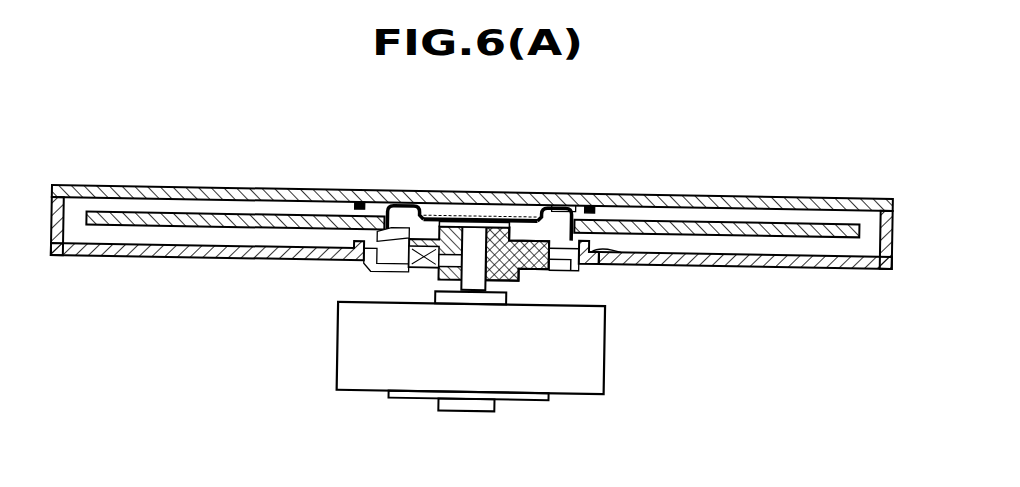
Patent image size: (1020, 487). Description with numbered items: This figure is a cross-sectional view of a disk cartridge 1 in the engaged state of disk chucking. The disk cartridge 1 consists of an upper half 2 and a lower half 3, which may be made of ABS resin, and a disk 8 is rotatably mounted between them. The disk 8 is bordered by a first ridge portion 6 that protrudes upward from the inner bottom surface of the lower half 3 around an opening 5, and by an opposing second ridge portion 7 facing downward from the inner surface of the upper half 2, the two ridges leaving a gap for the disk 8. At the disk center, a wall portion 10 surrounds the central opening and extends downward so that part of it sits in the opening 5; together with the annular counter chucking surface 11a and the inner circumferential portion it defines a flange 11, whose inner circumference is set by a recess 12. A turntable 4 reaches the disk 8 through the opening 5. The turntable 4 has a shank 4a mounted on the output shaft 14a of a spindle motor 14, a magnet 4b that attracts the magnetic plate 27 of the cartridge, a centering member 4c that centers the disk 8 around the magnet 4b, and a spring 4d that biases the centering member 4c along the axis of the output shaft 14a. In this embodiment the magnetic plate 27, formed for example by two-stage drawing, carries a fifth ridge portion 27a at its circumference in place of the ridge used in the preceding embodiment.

The disk cartridge 1 is at (898, 213).
The upper half 2 is at (888, 196).
The lower half 3 is at (887, 268).
The turntable 4 is at (372, 270).
The shank 4a is at (492, 284).
The magnet 4b is at (465, 215).
The centering member 4c is at (412, 283).
The spring 4d is at (426, 283).
The opening 5 is at (365, 262).
The first ridge portion 6 is at (632, 263).
The second ridge portion 7 is at (594, 208).
The disk 8 is at (757, 218).
The wall portion 10 is at (576, 257).
The flange 11 is at (562, 262).
The counter chucking surface 11a is at (395, 205).
The recess 12 is at (560, 203).
The spindle motor 14 is at (590, 362).
The output shaft 14a is at (470, 292).
The magnetic plate 27 is at (518, 212).
The fifth ridge portion 27a is at (406, 200).